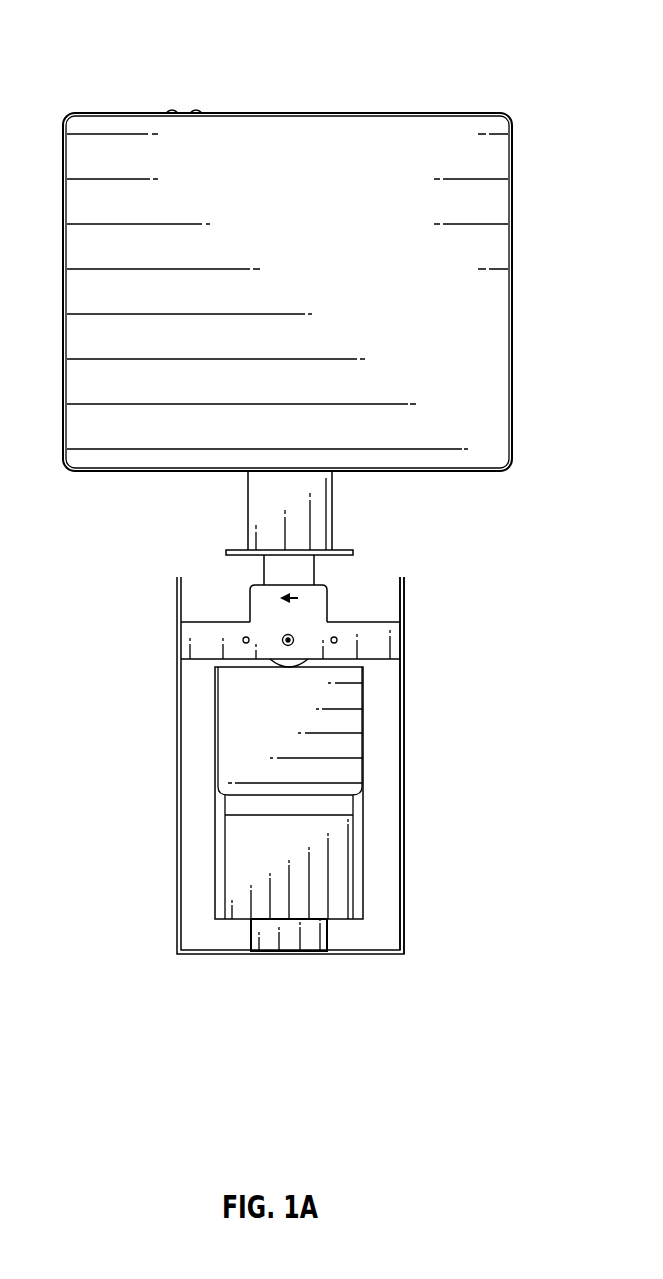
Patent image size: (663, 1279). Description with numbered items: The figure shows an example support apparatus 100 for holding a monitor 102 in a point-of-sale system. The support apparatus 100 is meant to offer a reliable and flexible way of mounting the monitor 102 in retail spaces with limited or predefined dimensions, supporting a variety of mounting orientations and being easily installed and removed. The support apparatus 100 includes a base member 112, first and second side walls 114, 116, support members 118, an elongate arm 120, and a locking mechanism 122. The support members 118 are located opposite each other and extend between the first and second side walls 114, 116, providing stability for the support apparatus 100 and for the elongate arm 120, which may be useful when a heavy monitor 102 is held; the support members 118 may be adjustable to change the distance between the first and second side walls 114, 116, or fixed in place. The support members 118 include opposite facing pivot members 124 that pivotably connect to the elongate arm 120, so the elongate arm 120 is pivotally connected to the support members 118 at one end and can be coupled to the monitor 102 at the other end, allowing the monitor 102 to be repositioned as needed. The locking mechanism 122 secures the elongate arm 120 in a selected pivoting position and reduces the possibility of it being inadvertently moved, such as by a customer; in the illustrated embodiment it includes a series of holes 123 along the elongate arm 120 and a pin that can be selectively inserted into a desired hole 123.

The support apparatus 100 is at (449, 725).
The monitor 102 is at (351, 112).
The base member 112 is at (218, 954).
The first side wall 114 is at (178, 793).
The second side wall 116 is at (404, 786).
The support members 118 is at (212, 633).
The elongate arm 120 is at (292, 528).
The locking mechanism 122 is at (294, 598).
The holes 123 is at (249, 637).
The pivot members 124 is at (289, 646).